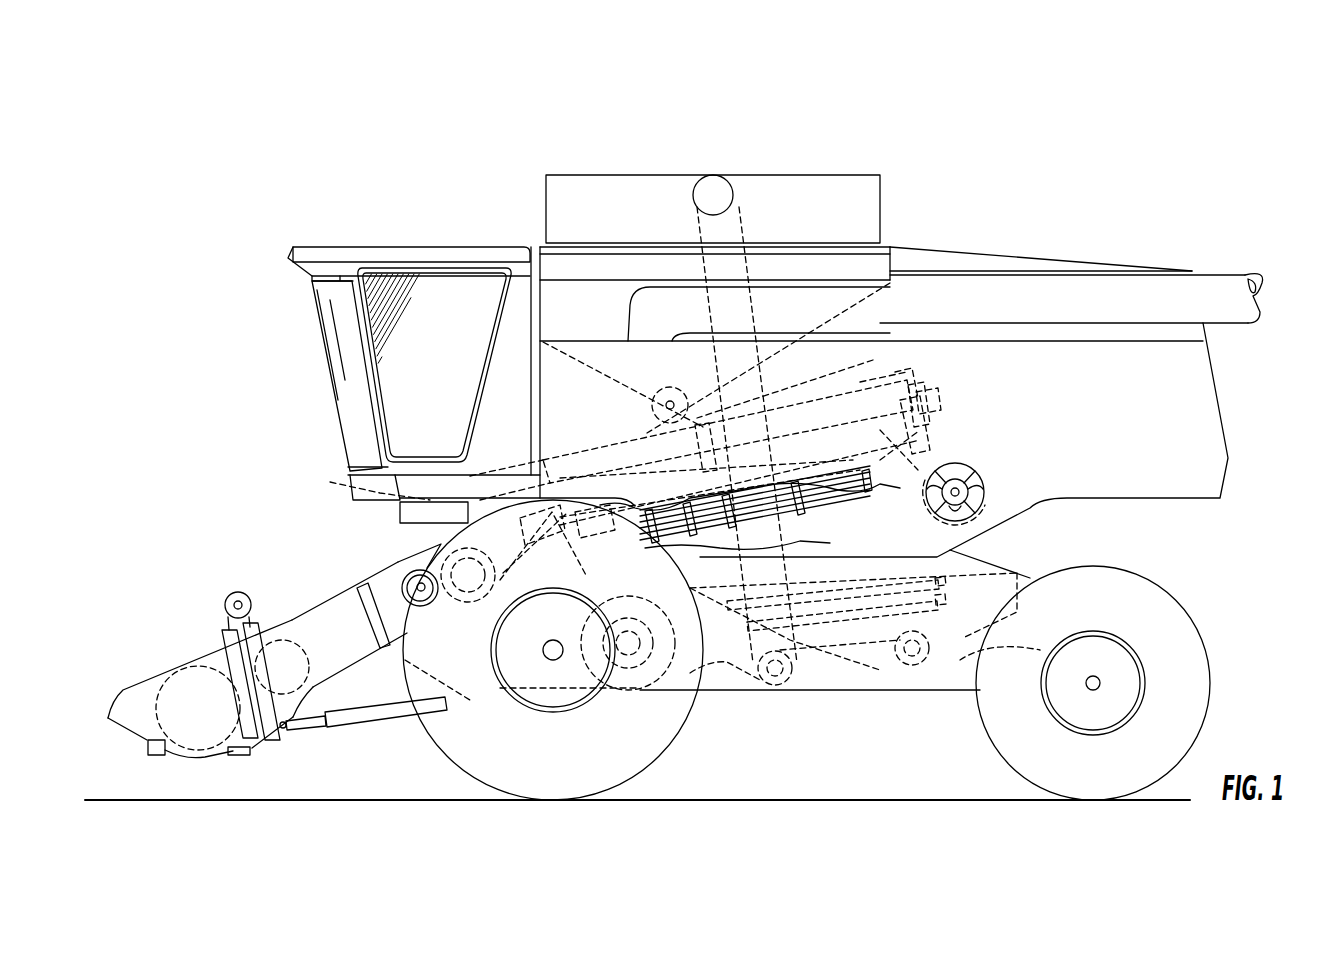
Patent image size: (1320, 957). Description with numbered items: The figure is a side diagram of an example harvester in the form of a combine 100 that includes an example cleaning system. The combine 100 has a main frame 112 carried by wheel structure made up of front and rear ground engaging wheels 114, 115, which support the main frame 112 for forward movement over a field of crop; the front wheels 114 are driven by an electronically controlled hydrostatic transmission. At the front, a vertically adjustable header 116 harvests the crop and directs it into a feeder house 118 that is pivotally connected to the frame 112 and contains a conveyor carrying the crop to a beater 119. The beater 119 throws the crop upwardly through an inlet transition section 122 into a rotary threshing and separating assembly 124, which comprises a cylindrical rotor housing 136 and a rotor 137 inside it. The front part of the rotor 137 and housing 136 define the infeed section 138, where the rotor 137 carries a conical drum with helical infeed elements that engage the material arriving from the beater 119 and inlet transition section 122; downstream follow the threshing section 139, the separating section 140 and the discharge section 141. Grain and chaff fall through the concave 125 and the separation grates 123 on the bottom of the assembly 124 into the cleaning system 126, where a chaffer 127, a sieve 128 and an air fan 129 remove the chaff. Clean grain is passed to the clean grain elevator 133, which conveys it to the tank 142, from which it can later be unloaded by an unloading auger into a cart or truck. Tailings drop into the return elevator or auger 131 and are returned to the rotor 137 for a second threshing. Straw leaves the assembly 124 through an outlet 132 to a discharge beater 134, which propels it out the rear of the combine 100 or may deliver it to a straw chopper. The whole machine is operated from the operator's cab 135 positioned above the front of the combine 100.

The combine 100 is at (1170, 155).
The main frame 112 is at (1020, 566).
The front ground engaging wheels 114 is at (420, 568).
The rear ground engaging wheels 115 is at (1212, 668).
The header 116 is at (162, 652).
The feeder house 118 is at (330, 607).
The beater 119 is at (441, 547).
The inlet transition section 122 is at (360, 484).
The separation grates 123 is at (812, 510).
The rotary threshing and separating assembly 124 is at (633, 462).
The concave 125 is at (645, 553).
The cleaning system 126 is at (856, 576).
The chaffer 127 is at (950, 578).
The sieve 128 is at (932, 651).
The air fan 129 is at (617, 690).
The return elevator or auger 131 is at (915, 672).
The outlet 132 is at (935, 432).
The clean grain elevator 133 is at (753, 331).
The discharge beater 134 is at (985, 471).
The operator's cab 135 is at (416, 246).
The rotor housing 136 is at (868, 381).
The rotor 137 is at (930, 386).
The infeed section 138 is at (504, 464).
The threshing section 139 is at (636, 433).
The separating section 140 is at (788, 402).
The discharge section 141 is at (908, 366).
The tank 142 is at (905, 262).